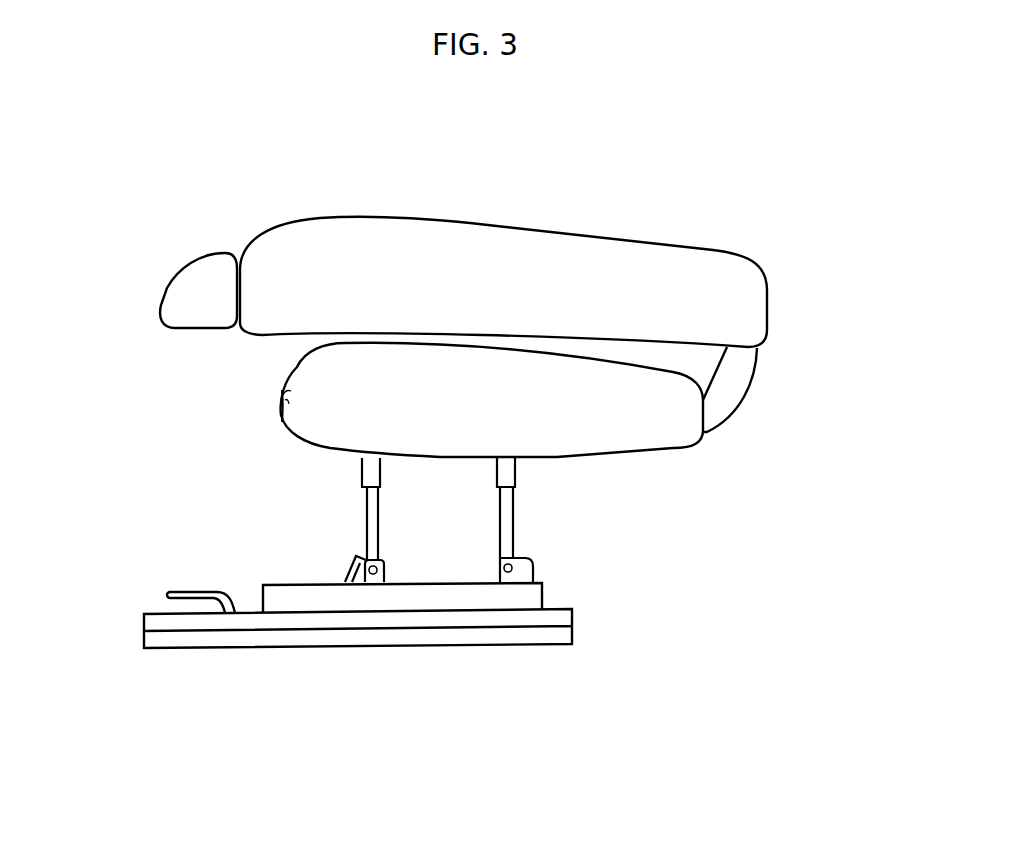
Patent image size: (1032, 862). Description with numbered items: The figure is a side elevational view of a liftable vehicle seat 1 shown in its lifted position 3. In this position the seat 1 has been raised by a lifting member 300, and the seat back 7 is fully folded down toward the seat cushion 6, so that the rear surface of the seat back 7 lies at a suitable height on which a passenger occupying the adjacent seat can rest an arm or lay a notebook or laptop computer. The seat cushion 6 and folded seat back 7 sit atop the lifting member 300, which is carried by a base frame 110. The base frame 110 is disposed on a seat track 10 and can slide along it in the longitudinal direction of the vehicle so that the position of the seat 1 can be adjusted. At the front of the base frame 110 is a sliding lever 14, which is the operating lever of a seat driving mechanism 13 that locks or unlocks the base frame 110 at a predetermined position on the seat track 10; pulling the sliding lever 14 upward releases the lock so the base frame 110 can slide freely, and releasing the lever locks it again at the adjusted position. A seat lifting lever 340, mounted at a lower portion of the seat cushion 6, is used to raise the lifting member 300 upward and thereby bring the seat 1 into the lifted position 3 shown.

The seat 1 is at (166, 245).
The lifted position 3 is at (767, 248).
The seat back 7 is at (340, 247).
The seat cushion 6 is at (303, 373).
The seat lifting lever 340 is at (289, 432).
The lifting member 300 is at (540, 512).
The base frame 110 is at (368, 597).
The seat track 10 is at (460, 633).
The seat driving mechanism 13 is at (204, 562).
The sliding lever 14 is at (187, 590).